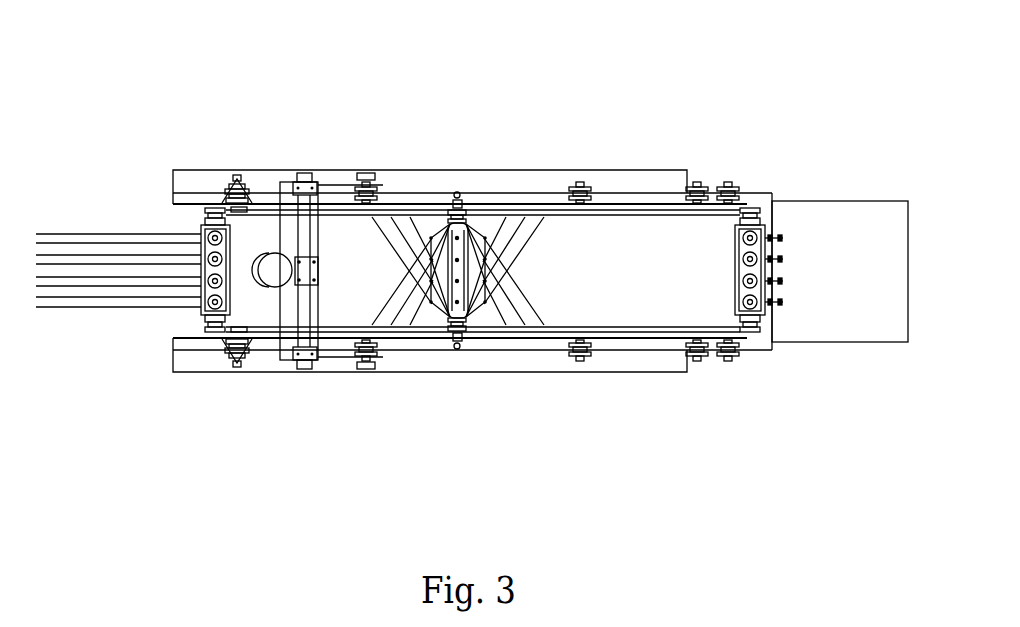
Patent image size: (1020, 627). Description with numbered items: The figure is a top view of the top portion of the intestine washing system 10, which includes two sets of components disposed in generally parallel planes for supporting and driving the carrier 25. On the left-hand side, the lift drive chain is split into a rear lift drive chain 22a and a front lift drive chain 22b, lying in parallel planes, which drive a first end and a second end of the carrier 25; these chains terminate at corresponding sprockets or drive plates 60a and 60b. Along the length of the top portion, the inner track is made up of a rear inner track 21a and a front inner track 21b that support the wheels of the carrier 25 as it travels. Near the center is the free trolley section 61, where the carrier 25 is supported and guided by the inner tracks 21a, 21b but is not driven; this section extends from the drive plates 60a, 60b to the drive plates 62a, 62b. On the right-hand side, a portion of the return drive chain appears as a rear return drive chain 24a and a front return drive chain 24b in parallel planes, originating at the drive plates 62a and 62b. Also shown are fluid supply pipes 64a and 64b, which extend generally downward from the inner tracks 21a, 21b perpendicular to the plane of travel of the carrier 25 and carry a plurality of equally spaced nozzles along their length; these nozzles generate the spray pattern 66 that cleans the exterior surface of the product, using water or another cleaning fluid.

The intestine washing system 10 is at (619, 41).
The rear inner track 21a is at (599, 216).
The front inner track 21b is at (617, 323).
The rear lift drive chain 22a is at (260, 203).
The front lift drive chain 22b is at (262, 340).
The rear return drive chain 24a is at (656, 203).
The front return drive chain 24b is at (643, 342).
The carrier 25 is at (201, 250).
The drive plate 60a is at (372, 176).
The drive plate 60b is at (360, 364).
The free trolley section 61 is at (570, 380).
The drive plate 62a is at (590, 203).
The drive plate 62b is at (578, 362).
The fluid supply pipe 64a is at (457, 192).
The fluid supply pipe 64b is at (457, 349).
The spray pattern 66 is at (382, 242).